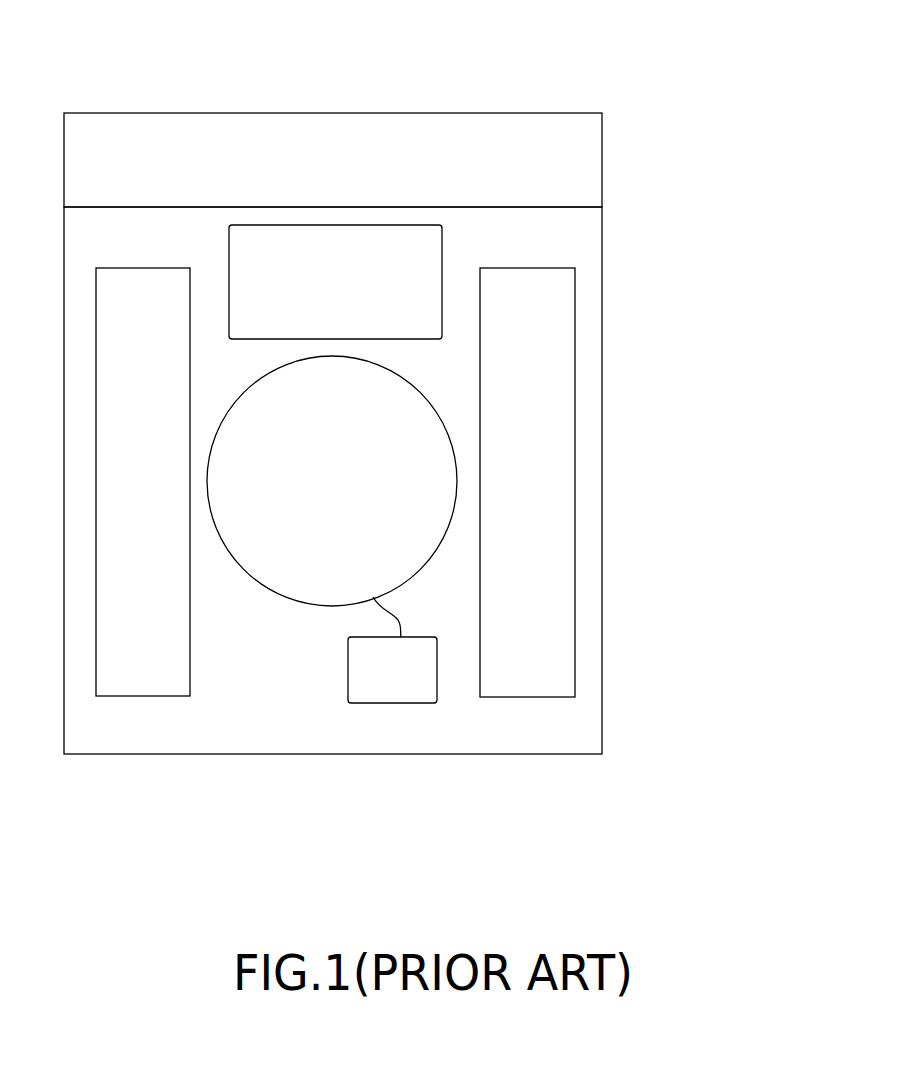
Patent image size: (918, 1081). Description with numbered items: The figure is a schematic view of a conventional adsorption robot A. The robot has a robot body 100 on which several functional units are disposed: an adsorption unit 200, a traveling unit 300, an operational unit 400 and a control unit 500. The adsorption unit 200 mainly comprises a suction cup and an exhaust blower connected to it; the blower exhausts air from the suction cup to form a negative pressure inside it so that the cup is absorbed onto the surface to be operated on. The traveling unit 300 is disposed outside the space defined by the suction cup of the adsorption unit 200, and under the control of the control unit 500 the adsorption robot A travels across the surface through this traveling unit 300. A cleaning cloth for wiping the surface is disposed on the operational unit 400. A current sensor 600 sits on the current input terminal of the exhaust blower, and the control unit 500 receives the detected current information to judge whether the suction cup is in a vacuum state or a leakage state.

The robot body 100 is at (416, 445).
The adsorption unit 200 is at (480, 437).
The traveling unit 300 is at (418, 482).
The operational unit 400 is at (350, 113).
The control unit 500 is at (294, 179).
The current sensor 600 is at (440, 707).
The adsorption robot A is at (752, 42).